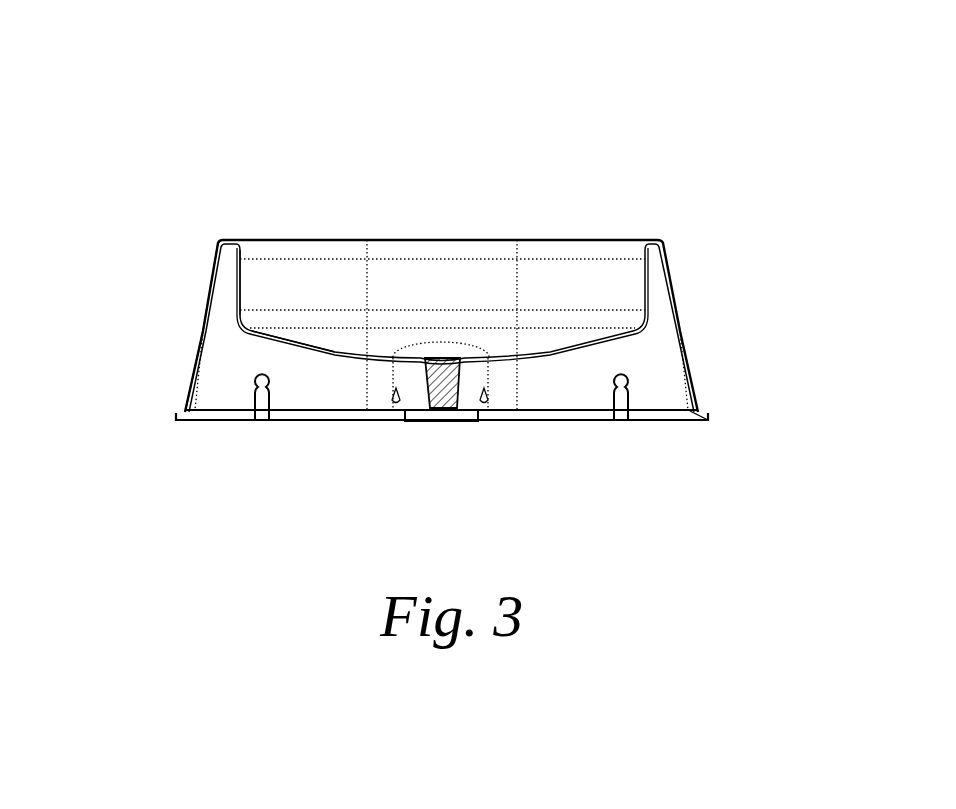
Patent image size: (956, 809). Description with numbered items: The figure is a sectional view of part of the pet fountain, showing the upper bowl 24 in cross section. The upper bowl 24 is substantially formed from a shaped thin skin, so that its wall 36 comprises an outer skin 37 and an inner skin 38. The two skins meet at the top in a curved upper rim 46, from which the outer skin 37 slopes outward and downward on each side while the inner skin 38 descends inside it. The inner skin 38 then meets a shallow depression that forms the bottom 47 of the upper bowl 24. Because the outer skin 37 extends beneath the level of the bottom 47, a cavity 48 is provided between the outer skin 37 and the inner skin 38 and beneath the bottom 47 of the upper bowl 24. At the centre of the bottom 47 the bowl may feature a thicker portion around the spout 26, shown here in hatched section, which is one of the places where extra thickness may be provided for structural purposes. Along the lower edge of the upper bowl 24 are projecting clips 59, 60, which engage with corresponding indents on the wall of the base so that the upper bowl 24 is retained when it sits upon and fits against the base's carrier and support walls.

The upper bowl 24 is at (497, 263).
The spout 26 is at (427, 352).
The wall 36 is at (725, 272).
The outer skin 37 is at (195, 355).
The inner skin 38 is at (241, 292).
The curved upper rim 46 is at (220, 237).
The bottom 47 is at (323, 362).
The cavity 48 is at (598, 430).
The projecting clip 59 is at (185, 412).
The projecting clip 60 is at (699, 407).